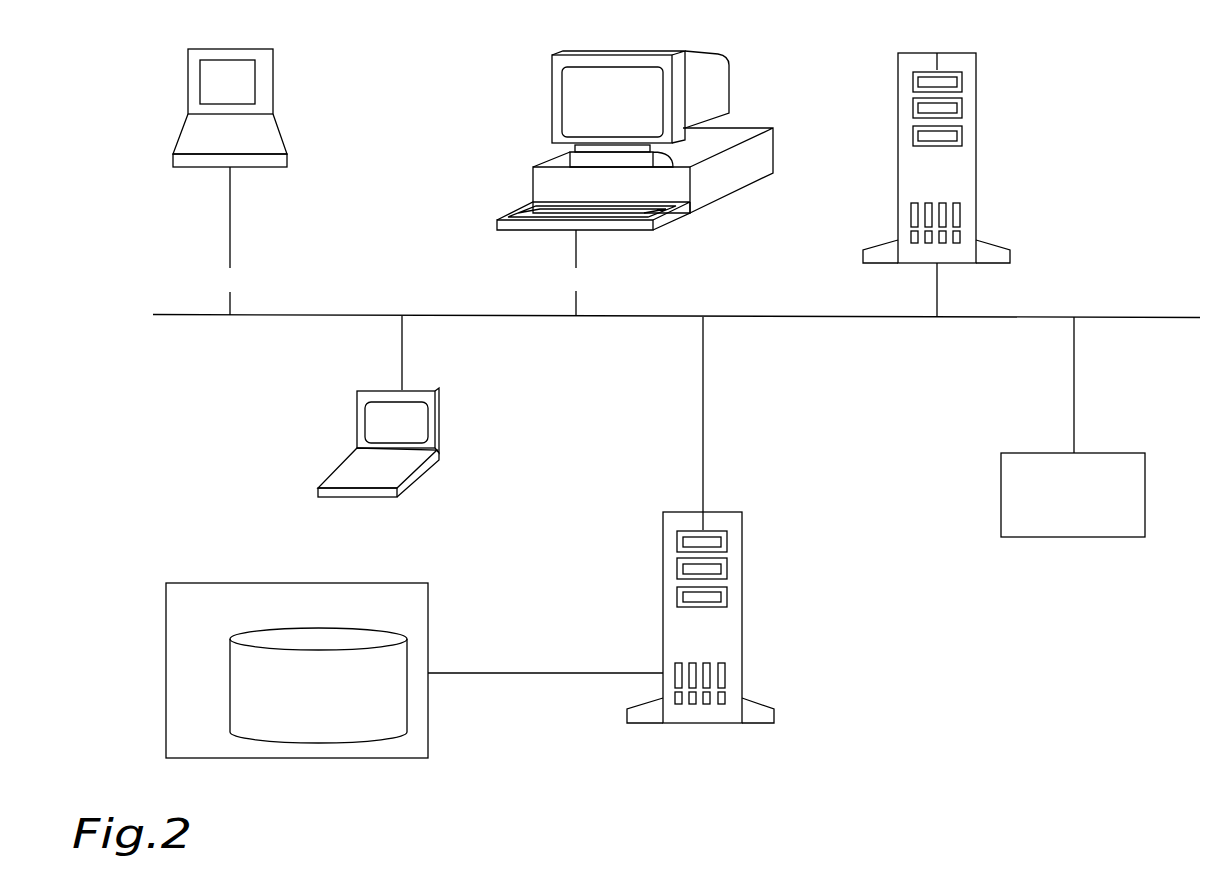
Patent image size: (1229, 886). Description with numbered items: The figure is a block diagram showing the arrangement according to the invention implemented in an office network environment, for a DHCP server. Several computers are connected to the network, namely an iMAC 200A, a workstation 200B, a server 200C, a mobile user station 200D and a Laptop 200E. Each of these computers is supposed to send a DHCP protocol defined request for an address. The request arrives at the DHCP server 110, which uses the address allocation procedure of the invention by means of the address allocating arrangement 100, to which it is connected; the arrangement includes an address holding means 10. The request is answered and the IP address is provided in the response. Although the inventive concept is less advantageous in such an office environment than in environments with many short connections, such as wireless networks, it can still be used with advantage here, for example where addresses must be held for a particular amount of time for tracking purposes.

The iMAC 200A is at (197, 47).
The workstation 200B is at (565, 52).
The server 200C is at (917, 53).
The mobile user station 200D is at (1035, 452).
The Laptop 200E is at (370, 390).
The DHCP server 110 is at (680, 512).
The address allocating arrangement 100 is at (210, 583).
The address holding means 10 is at (232, 683).